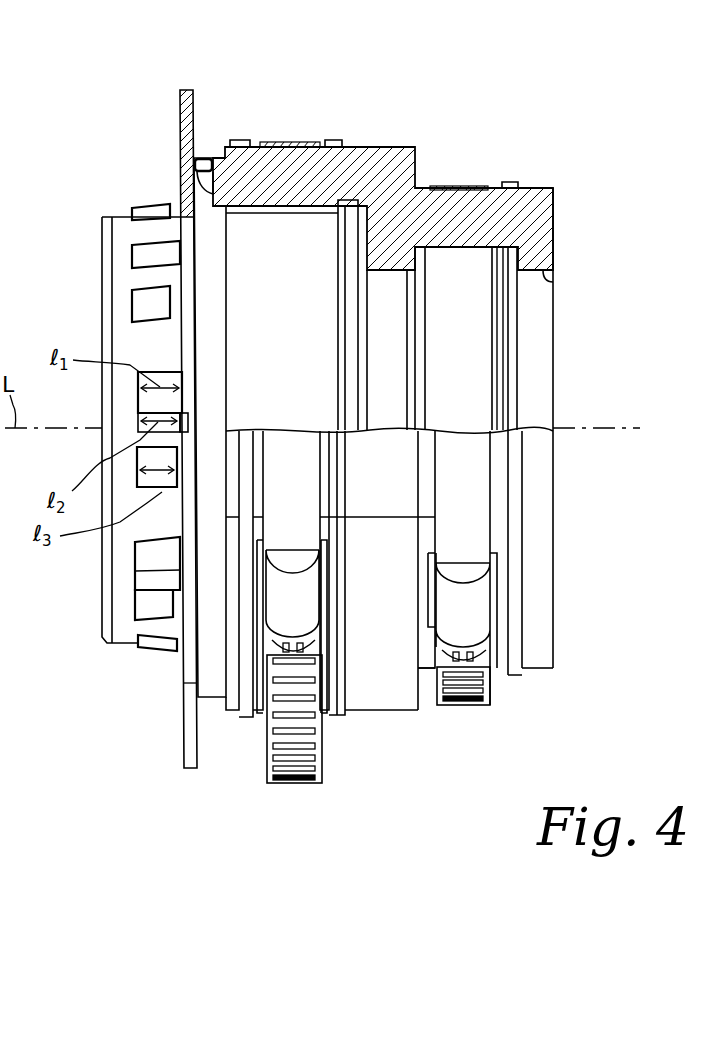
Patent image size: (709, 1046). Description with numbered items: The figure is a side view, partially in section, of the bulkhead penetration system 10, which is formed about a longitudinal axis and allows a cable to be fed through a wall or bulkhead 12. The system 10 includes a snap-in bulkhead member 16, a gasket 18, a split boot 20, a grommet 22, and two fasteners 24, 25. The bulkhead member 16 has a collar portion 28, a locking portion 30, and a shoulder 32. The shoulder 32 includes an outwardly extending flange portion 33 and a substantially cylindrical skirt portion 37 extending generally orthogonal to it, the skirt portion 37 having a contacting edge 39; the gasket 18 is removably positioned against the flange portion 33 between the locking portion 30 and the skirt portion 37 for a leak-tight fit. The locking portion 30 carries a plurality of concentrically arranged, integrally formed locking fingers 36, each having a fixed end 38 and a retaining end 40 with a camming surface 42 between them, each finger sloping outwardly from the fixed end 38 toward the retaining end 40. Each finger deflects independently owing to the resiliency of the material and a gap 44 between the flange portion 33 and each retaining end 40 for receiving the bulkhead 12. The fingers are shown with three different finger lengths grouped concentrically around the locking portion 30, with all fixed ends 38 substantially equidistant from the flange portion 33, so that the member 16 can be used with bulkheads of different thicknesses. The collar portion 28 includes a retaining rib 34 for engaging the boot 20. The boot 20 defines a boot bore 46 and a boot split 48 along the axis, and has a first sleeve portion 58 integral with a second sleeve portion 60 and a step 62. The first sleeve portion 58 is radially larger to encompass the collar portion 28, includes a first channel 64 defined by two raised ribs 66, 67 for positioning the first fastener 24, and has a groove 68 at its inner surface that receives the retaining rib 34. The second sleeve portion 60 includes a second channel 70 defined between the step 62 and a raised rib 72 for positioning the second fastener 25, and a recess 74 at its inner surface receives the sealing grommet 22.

The bulkhead penetration system 10 is at (587, 112).
The bulkhead 12 is at (178, 113).
The snap-in bulkhead member 16 is at (128, 652).
The gasket 18 is at (197, 158).
The split boot 20 is at (405, 714).
The grommet 22 is at (468, 333).
The fastener 24 is at (308, 786).
The fastener 25 is at (478, 706).
The collar portion 28 is at (352, 200).
The locking portion 30 is at (130, 540).
The shoulder 32 is at (226, 700).
The flange portion 33 is at (208, 170).
The retaining rib 34 is at (417, 160).
The locking fingers 36 is at (148, 262).
The skirt portion 37 is at (212, 218).
The fixed end 38 is at (140, 384).
The contacting edge 39 is at (178, 338).
The retaining end 40 is at (193, 350).
The camming surface 42 is at (146, 405).
The gap 44 is at (190, 312).
The boot bore 46 is at (553, 282).
The boot split 48 is at (548, 500).
The first sleeve portion 58 is at (371, 714).
The second sleeve portion 60 is at (544, 676).
The step 62 is at (420, 694).
The first channel 64 is at (262, 715).
The raised rib 66 is at (243, 140).
The raised rib 67 is at (333, 140).
The groove 68 is at (352, 232).
The second channel 70 is at (497, 670).
The raised rib 72 is at (510, 182).
The recess 74 is at (501, 245).